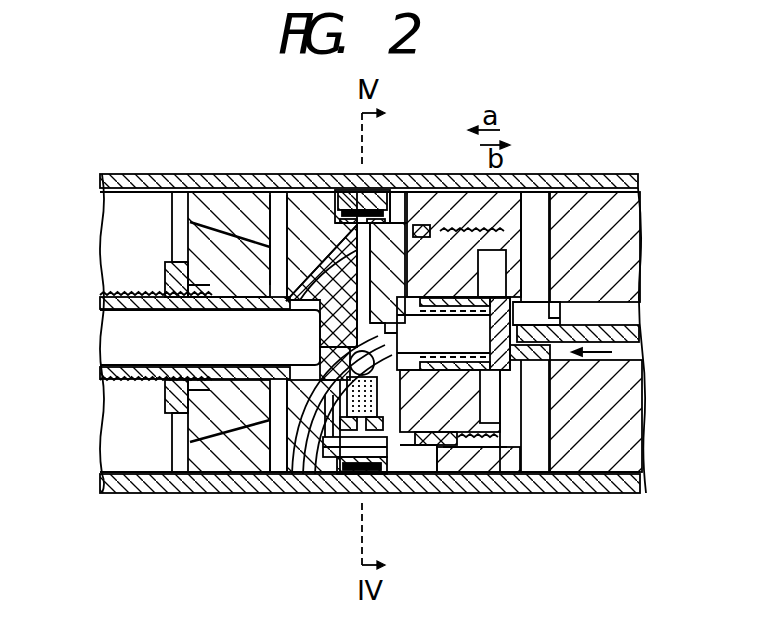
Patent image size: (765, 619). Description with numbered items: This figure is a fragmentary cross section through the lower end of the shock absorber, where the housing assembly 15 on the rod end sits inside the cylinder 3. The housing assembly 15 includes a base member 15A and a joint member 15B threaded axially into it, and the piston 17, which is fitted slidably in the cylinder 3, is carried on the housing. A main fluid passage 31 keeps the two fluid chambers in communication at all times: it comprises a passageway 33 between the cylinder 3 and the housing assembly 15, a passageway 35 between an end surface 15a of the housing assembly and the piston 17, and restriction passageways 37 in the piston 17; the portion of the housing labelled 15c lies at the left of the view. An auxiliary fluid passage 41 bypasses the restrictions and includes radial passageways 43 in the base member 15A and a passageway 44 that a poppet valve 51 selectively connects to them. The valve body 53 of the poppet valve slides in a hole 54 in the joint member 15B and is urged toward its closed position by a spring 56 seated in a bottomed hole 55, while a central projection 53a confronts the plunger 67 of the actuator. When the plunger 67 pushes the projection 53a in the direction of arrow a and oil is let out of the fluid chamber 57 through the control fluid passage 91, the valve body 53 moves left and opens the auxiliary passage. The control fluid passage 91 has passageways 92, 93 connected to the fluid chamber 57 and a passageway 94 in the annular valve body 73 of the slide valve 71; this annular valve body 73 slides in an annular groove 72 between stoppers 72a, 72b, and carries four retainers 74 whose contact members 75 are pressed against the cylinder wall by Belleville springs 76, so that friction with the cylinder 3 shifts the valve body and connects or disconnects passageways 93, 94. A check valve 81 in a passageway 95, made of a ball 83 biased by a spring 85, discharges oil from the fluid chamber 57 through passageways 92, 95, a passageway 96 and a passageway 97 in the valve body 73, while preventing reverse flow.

The cylinder 3 is at (517, 196).
The housing assembly 15 is at (440, 203).
The base member 15A is at (603, 205).
The joint member 15B is at (263, 207).
The end surface 15a is at (247, 213).
The housing left portion 15c is at (103, 293).
The piston 17 is at (210, 220).
The main fluid passage 31 is at (573, 190).
The passageway 33 is at (540, 190).
The passageway 35 is at (215, 213).
The passageways 37 is at (177, 197).
The auxiliary fluid passage 41 is at (537, 265).
The passageways 43 is at (545, 283).
The passageway 44 is at (520, 258).
The poppet valve 51 is at (503, 372).
The valve body 53 is at (528, 445).
The central projection 53a is at (562, 306).
The hole 54 is at (458, 440).
The bottomed hole 55 is at (480, 452).
The spring 56 is at (434, 478).
The fluid chamber 57 is at (424, 447).
The plunger 67 is at (639, 338).
The slide valve 71 is at (397, 190).
The annular groove 72 is at (313, 197).
The stopper 72a is at (298, 207).
The stopper 72b is at (430, 190).
The annular valve body 73 is at (340, 190).
The retainers 74 is at (400, 193).
The contact members 75 is at (367, 190).
The Belleville springs 76 is at (337, 213).
The check valve 81 is at (313, 474).
The ball 83 is at (332, 474).
The spring 85 is at (366, 383).
The control fluid passage 91 is at (340, 327).
The passageway 92 is at (289, 474).
The passageway 93 is at (317, 307).
The passageway 94 is at (258, 302).
The passageway 95 is at (294, 476).
The passageway 96 is at (343, 474).
The passageway 97 is at (407, 480).